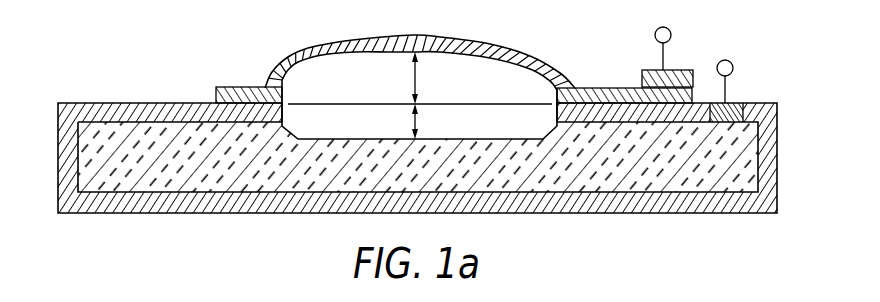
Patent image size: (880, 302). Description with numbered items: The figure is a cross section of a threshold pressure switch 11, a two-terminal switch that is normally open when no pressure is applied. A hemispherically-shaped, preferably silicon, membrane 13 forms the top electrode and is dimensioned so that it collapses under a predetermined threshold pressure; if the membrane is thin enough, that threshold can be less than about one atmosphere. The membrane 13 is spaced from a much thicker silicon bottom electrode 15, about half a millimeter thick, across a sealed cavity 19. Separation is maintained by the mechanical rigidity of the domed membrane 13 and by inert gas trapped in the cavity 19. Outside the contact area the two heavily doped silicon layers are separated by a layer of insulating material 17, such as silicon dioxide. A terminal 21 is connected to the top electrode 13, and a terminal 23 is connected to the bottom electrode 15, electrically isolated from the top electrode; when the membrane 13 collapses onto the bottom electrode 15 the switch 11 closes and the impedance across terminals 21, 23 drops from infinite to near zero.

The threshold pressure switch 11 is at (161, 47).
The membrane 13 is at (305, 49).
The bottom electrode 15 is at (506, 132).
The layer of insulating material 17 is at (98, 103).
The cavity 19 is at (494, 72).
The terminal 21 is at (671, 35).
The terminal 23 is at (733, 66).